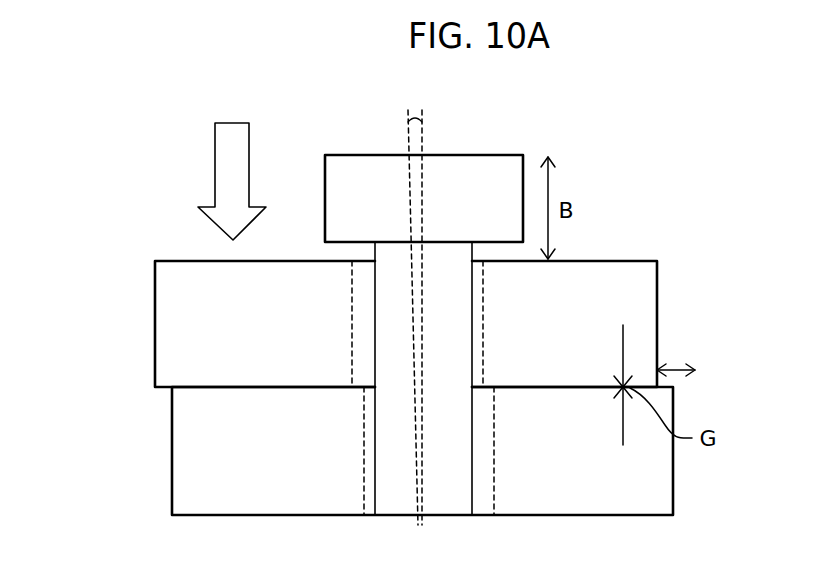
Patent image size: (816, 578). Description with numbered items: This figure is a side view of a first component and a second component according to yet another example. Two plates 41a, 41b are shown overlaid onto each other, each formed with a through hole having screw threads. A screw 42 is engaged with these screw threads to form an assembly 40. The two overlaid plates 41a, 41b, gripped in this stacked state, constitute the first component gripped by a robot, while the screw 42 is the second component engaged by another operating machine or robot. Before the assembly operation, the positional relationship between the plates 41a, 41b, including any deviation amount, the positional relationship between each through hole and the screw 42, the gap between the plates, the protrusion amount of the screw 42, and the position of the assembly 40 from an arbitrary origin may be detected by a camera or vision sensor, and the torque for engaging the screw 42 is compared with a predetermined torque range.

The assembly 40 is at (707, 172).
The plate 41a is at (638, 483).
The plate 41b is at (638, 288).
The screw 42 is at (480, 167).